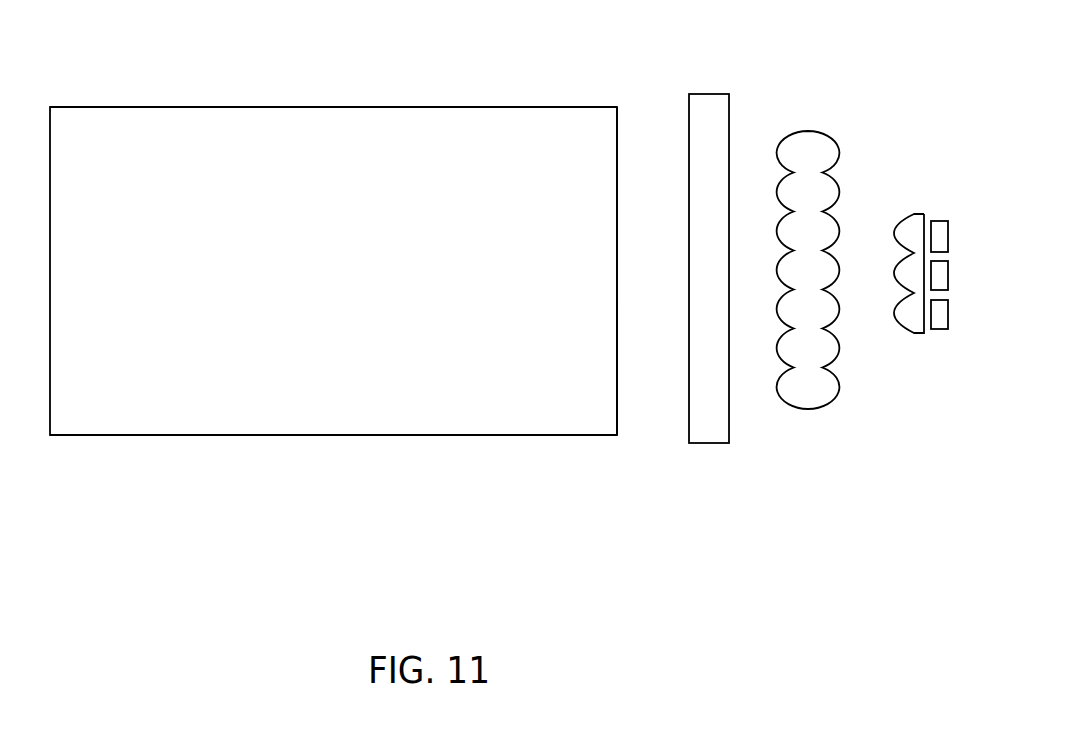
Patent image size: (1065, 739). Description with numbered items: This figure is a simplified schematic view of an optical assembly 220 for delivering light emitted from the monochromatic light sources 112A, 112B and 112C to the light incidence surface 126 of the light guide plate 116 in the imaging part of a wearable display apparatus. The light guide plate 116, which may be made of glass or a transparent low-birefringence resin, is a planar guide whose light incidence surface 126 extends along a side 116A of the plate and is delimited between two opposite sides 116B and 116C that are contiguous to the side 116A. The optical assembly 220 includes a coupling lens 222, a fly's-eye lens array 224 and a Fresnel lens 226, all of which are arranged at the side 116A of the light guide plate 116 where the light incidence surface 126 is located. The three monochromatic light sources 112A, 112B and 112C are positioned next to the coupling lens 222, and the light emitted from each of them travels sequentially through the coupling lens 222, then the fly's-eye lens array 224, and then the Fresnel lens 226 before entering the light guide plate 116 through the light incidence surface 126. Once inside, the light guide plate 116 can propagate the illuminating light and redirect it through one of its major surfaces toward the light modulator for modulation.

The light guide plate 116 is at (357, 273).
The side of the light guide plate 116A is at (630, 149).
The side of the light guide plate 116B is at (339, 465).
The side of the light guide plate 116C is at (338, 80).
The light incidence surface 126 is at (618, 408).
The optical assembly 220 is at (990, 75).
The coupling lens 222 is at (913, 325).
The fly's-eye lens array 224 is at (812, 408).
The Fresnel lens 226 is at (707, 433).
The monochromatic light source 112A is at (940, 317).
The monochromatic light source 112B is at (940, 275).
The monochromatic light source 112C is at (940, 233).